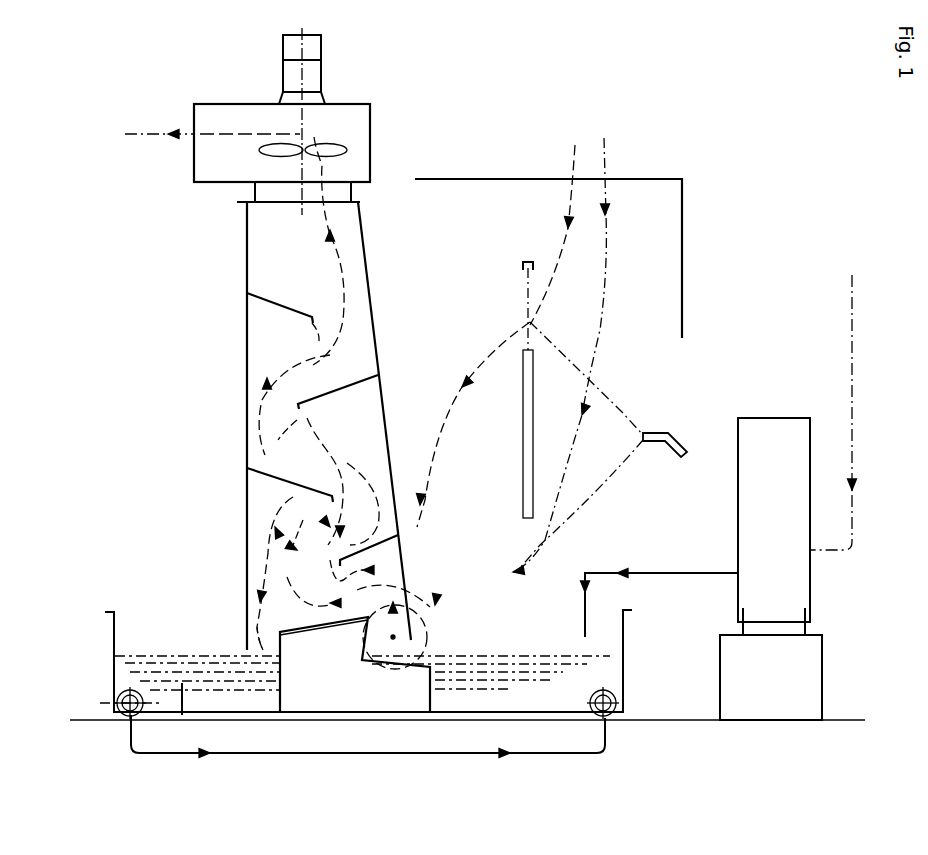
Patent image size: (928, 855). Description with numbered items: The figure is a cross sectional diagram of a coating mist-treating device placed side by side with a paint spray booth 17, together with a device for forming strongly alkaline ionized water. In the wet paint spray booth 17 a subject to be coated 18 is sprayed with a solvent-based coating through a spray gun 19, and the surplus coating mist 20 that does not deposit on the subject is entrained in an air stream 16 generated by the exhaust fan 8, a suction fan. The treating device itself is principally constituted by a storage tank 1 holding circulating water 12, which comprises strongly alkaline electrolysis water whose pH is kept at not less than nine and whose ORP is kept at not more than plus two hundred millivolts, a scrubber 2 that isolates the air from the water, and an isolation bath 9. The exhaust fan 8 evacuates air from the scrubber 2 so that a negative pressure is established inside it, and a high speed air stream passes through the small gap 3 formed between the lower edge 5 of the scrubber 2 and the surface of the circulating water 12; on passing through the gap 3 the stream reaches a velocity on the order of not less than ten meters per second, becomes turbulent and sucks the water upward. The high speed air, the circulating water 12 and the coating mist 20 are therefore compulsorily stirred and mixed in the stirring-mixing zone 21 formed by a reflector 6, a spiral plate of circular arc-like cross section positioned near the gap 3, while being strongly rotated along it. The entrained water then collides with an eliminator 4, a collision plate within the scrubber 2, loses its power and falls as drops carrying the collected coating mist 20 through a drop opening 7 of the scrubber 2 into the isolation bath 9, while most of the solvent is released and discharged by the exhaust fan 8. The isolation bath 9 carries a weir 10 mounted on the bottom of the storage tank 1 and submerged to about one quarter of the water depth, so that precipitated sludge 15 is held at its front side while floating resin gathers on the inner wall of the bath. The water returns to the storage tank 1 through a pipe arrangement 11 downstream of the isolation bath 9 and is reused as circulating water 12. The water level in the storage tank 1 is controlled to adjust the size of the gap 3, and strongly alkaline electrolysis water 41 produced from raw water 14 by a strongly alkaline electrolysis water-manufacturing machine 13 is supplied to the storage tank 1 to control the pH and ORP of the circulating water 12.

The storage tank 1 is at (478, 713).
The scrubber 2 is at (280, 450).
The small gap 3 is at (415, 648).
The eliminator 4 is at (271, 307).
The lower edge 5 is at (410, 640).
The reflector 6 is at (355, 700).
The drop opening 7 is at (262, 648).
The exhaust fan 8 is at (353, 137).
The isolation bath 9 is at (114, 645).
The weir 10 is at (182, 705).
The pipe arrangement 11 is at (385, 753).
The circulating water 12 is at (536, 678).
The strongly alkaline electrolysis water-manufacturing machine 13 is at (795, 545).
The raw water 14 is at (845, 290).
The sludge 15 is at (213, 667).
The air stream 16 is at (587, 152).
The paint spray booth 17 is at (682, 203).
The subject to be coated 18 is at (528, 417).
The spray gun 19 is at (677, 428).
The coating mist 20 is at (622, 412).
The stirring-mixing zone 21 is at (368, 619).
The strongly alkaline electrolysis water 41 is at (655, 573).